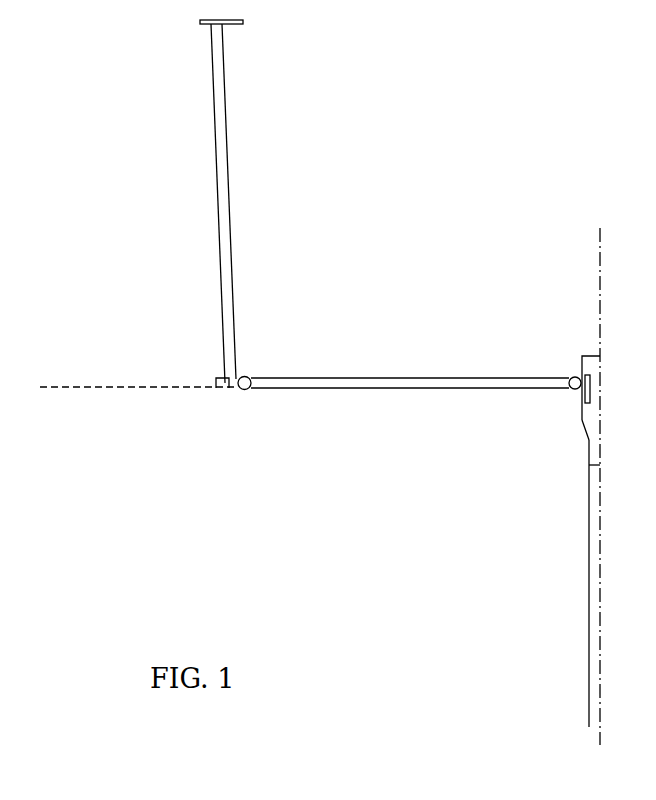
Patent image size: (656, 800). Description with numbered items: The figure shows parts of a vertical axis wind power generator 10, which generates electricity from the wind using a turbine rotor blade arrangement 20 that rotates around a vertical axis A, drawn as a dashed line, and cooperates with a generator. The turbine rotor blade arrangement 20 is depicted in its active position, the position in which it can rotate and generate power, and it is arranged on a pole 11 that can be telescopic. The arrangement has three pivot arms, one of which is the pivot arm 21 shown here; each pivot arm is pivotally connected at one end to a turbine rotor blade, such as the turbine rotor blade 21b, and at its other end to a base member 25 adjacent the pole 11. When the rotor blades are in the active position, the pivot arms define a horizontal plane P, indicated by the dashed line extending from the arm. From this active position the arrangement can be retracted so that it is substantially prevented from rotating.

The vertical axis wind power generator 10 is at (165, 209).
The turbine rotor blade arrangement 20 is at (330, 372).
The pivot arm 21 is at (368, 392).
The turbine rotor blade 21b is at (228, 193).
The base member 25 is at (580, 425).
The pole 11 is at (588, 598).
The vertical axis A is at (598, 310).
The horizontal plane P is at (153, 390).